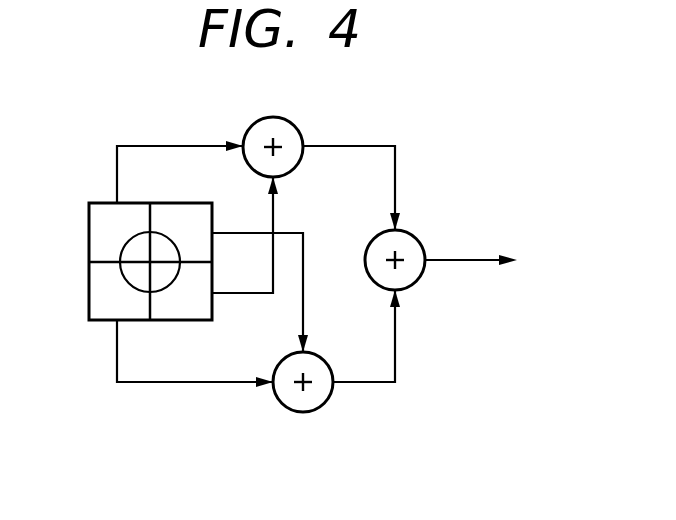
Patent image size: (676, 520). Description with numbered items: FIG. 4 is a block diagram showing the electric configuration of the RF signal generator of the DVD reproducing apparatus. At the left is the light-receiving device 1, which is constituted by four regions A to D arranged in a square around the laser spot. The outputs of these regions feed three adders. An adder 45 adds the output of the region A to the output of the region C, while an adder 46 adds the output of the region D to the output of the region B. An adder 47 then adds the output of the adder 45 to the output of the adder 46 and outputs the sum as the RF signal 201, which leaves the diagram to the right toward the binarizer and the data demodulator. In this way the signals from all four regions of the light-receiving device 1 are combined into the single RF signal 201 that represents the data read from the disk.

The light-receiving device 1 is at (89, 238).
The adder 45 is at (293, 124).
The adder 46 is at (323, 359).
The adder 47 is at (414, 238).
The RF signal 201 is at (462, 258).